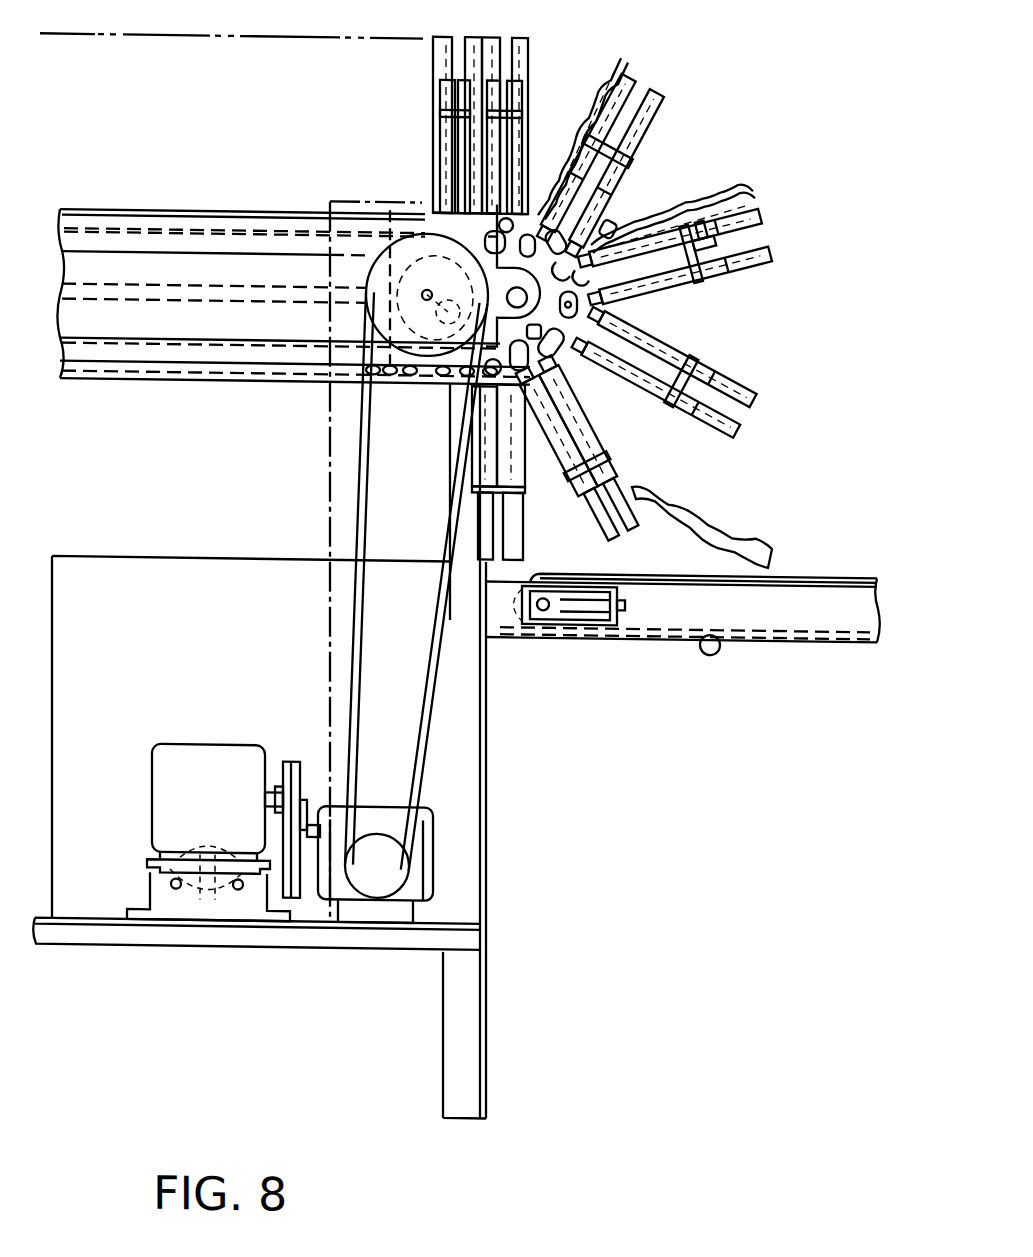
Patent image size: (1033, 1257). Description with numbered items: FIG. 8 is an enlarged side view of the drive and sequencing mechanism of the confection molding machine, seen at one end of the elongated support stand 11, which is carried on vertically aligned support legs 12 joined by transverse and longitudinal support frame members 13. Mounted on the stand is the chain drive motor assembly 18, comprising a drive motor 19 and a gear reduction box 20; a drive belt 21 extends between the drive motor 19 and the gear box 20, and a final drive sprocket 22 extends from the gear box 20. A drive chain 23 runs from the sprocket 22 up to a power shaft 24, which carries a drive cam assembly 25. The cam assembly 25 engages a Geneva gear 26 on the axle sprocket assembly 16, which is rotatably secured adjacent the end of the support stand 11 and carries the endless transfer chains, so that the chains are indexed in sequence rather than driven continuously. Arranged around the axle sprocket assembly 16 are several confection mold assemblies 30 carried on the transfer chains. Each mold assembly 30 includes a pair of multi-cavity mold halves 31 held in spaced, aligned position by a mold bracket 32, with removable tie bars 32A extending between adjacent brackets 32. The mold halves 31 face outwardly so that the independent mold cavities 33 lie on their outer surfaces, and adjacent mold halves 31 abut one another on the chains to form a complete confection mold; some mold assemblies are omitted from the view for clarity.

The support stand 11 is at (272, 971).
The support legs 12 is at (463, 1031).
The support frame members 13 is at (468, 939).
The axle sprocket assembly 16 is at (607, 305).
The chain drive motor assembly 18 is at (258, 730).
The drive motor 19 is at (170, 797).
The gear reduction box 20 is at (423, 890).
The drive belt 21 is at (293, 764).
The final drive sprocket 22 is at (378, 889).
The drive chain 23 is at (357, 505).
The power shaft 24 is at (423, 287).
The drive cam assembly 25 is at (450, 312).
The Geneva gear 26 is at (612, 225).
The confection mold assemblies 30 is at (750, 372).
The multi-cavity mold halves 31 is at (757, 218).
The mold bracket 32 is at (713, 259).
The tie bars 32A is at (697, 262).
The mold cavities 33 is at (637, 67).